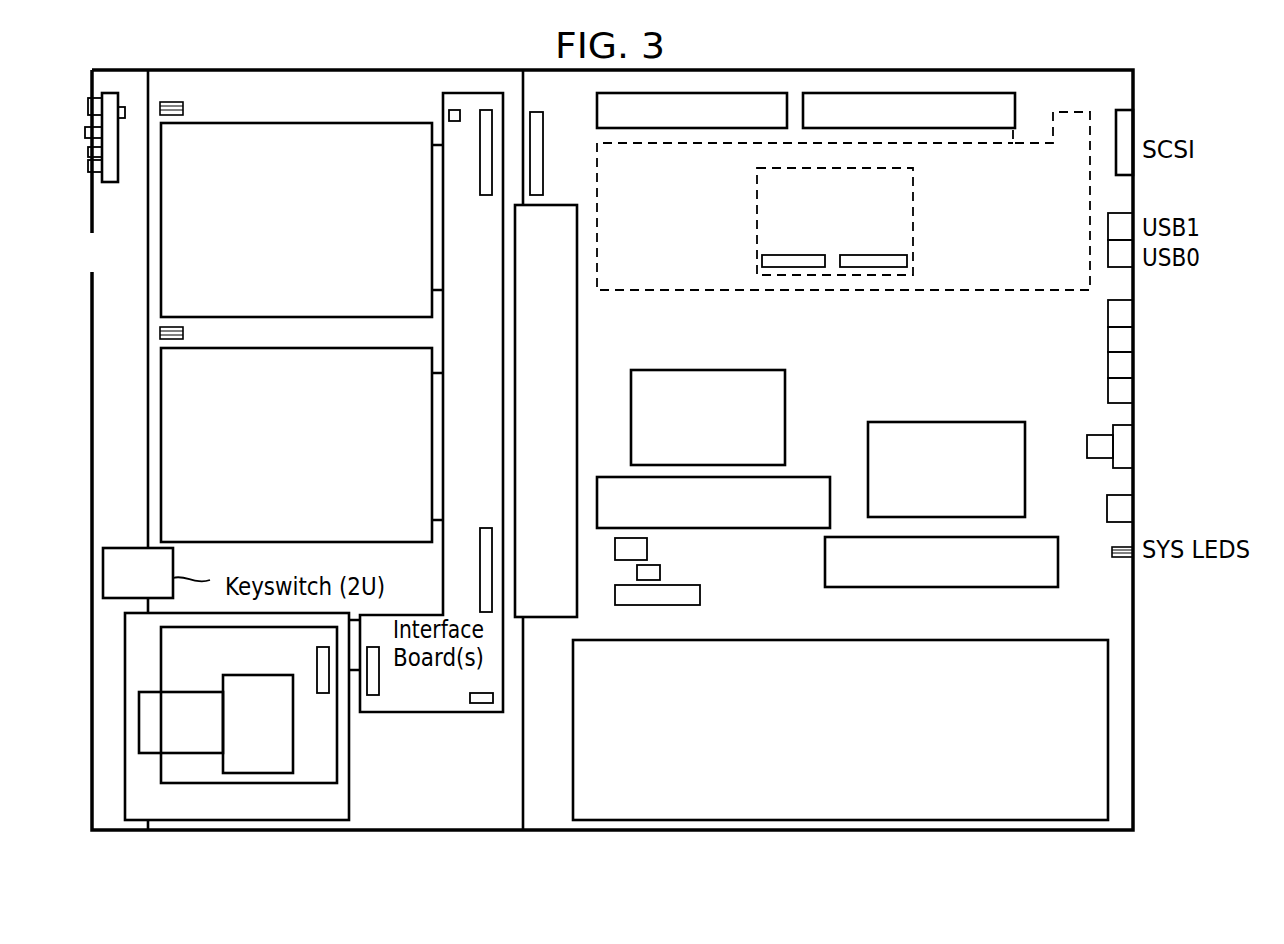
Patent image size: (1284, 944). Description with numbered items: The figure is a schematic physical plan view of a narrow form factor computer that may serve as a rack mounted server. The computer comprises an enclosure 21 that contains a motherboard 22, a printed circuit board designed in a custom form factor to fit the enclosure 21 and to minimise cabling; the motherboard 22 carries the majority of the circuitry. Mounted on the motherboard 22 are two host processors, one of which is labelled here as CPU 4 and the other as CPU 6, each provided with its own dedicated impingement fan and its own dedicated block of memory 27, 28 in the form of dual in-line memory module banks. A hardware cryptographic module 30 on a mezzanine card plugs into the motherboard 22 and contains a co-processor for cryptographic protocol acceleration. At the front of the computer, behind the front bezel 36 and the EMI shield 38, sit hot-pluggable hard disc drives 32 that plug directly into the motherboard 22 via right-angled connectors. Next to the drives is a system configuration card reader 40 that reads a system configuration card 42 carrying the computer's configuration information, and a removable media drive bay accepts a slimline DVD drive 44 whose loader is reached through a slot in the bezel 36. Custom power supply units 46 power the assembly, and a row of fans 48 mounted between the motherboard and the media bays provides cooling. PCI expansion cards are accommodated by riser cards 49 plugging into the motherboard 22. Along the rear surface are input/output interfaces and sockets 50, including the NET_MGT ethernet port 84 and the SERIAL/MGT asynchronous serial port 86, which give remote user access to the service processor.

The enclosure 21 is at (553, 843).
The front bezel 36 is at (92, 322).
The EMI shield 38 is at (148, 375).
The hard disc drive 32 is at (380, 135).
The processor / hard disk drive bay 4 is at (422, 528).
The DVD drive 44 is at (340, 803).
The system configuration card 42 is at (139, 728).
The system configuration card reader 40 is at (278, 733).
The fans 48 is at (560, 338).
The riser cards 49 is at (597, 115).
The motherboard 22 is at (907, 333).
The hardware cryptographic module 30 is at (770, 215).
The memory 27 is at (780, 515).
The processor CPU0 6 is at (945, 437).
The memory 28 is at (947, 590).
The power supply units 46 is at (1090, 648).
The I/O interfaces and sockets 50 is at (1116, 312).
The asynchronous serial port 86 is at (1125, 452).
The ethernet port 84 is at (1120, 508).